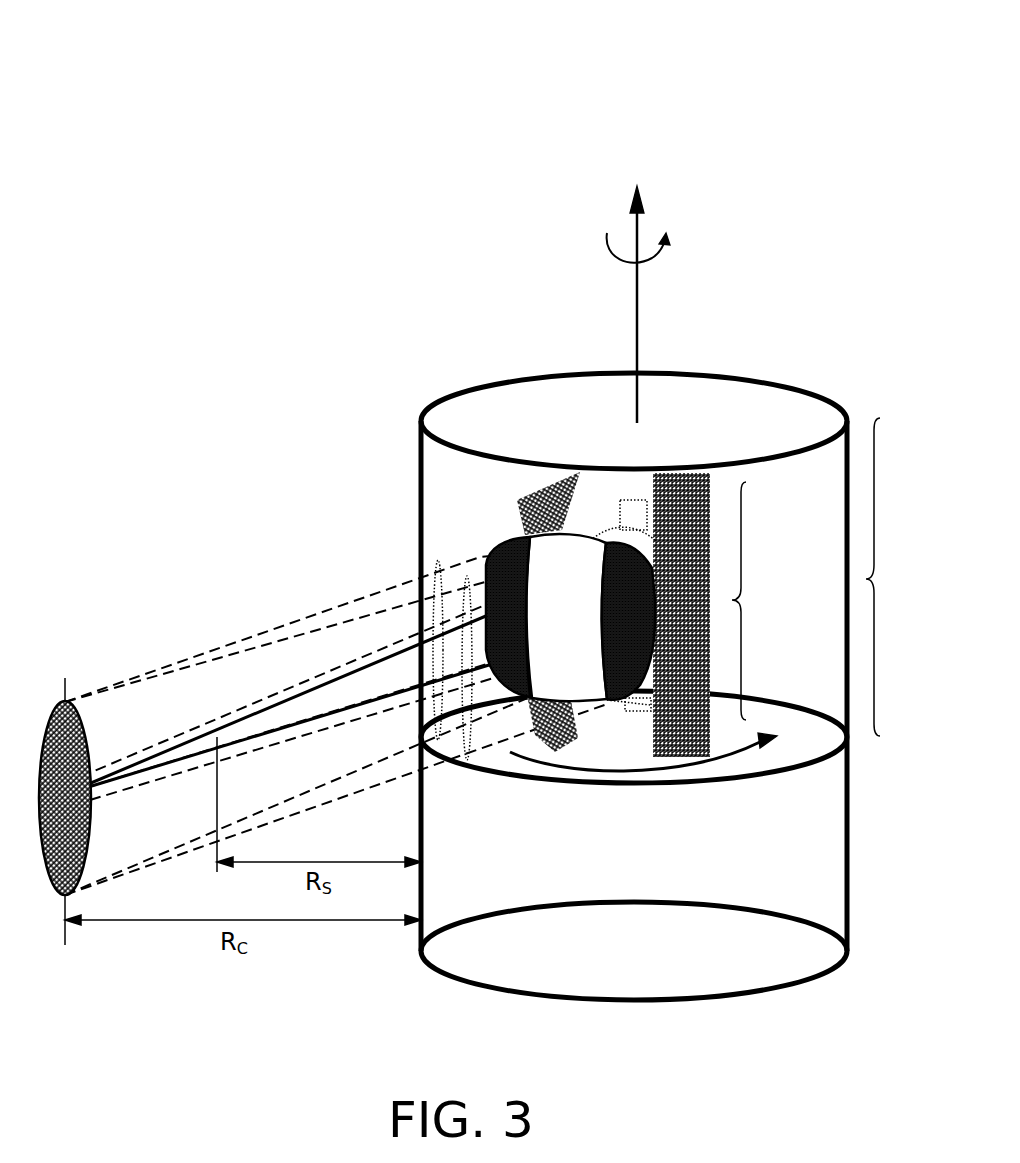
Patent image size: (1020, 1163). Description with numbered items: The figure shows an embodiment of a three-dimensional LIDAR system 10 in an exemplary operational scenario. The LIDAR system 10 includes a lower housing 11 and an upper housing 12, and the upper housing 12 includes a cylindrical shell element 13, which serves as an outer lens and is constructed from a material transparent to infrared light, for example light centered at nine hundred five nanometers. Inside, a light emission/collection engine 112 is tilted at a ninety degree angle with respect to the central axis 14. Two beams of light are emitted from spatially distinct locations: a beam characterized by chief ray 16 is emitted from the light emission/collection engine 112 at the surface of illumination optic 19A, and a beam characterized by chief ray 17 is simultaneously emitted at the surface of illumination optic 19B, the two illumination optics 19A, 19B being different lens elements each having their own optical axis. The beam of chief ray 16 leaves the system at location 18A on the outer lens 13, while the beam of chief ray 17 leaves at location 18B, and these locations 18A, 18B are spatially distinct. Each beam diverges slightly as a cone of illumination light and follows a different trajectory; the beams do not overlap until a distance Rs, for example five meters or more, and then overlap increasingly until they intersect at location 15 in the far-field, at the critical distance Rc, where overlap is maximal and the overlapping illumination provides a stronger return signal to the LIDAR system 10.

The 3-D LIDAR system 10 is at (84, 62).
The lower housing 11 is at (848, 862).
The upper housing 12 is at (875, 579).
The cylindrical shell element 13 is at (440, 492).
The central axis 14 is at (637, 312).
The location 15 is at (48, 722).
The chief ray 16 is at (316, 690).
The chief ray 17 is at (306, 722).
The location on the outer lens 18A is at (438, 560).
The location on the outer lens 18B is at (467, 577).
The illumination optic 19A is at (508, 617).
The illumination optic 19B is at (628, 620).
The light emission/collection engine 112 is at (647, 614).